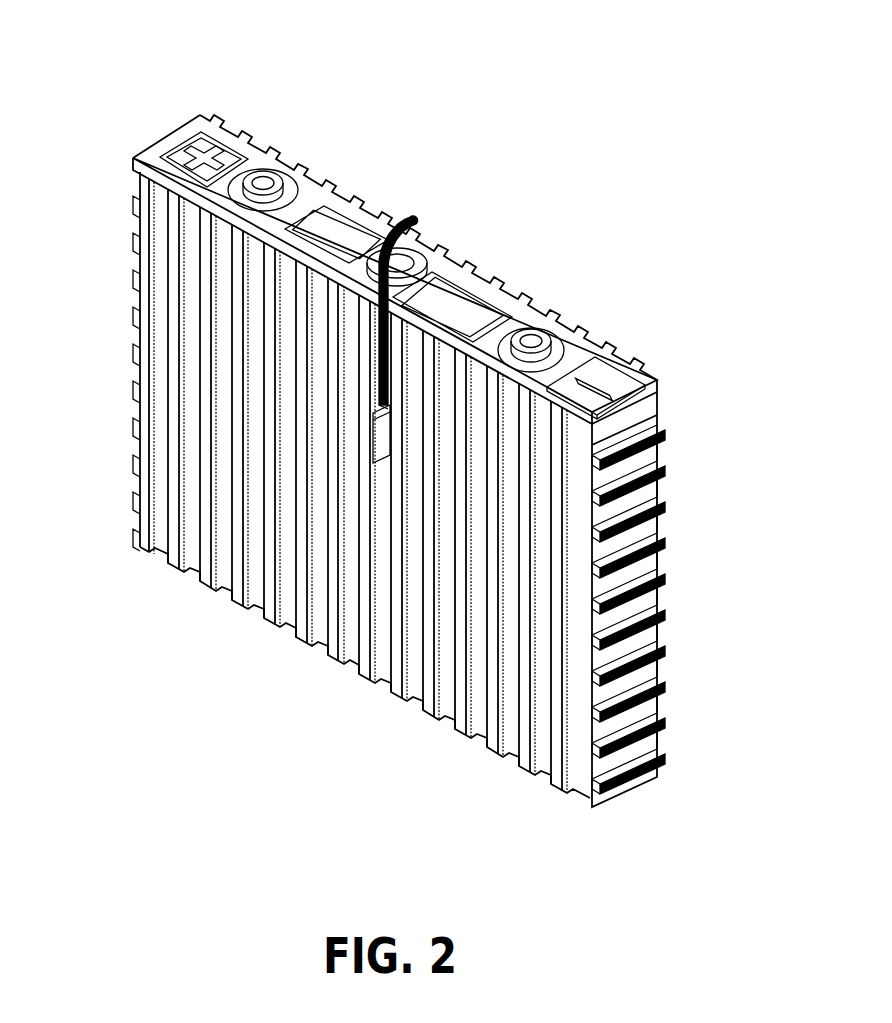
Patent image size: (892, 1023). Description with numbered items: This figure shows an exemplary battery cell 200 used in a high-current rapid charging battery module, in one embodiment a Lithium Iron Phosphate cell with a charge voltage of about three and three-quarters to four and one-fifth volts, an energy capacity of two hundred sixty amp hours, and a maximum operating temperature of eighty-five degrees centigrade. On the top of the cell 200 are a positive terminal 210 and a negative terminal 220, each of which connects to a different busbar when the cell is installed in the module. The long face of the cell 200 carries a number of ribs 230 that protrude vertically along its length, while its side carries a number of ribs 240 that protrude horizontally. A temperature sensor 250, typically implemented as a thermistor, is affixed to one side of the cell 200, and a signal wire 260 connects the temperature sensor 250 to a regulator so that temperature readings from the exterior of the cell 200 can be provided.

The battery cell 200 is at (116, 98).
The positive terminal 210 is at (272, 190).
The negative terminal 220 is at (540, 347).
The ribs 230 is at (170, 563).
The ribs 240 is at (672, 507).
The temperature sensor 250 is at (385, 430).
The signal wire 260 is at (418, 225).